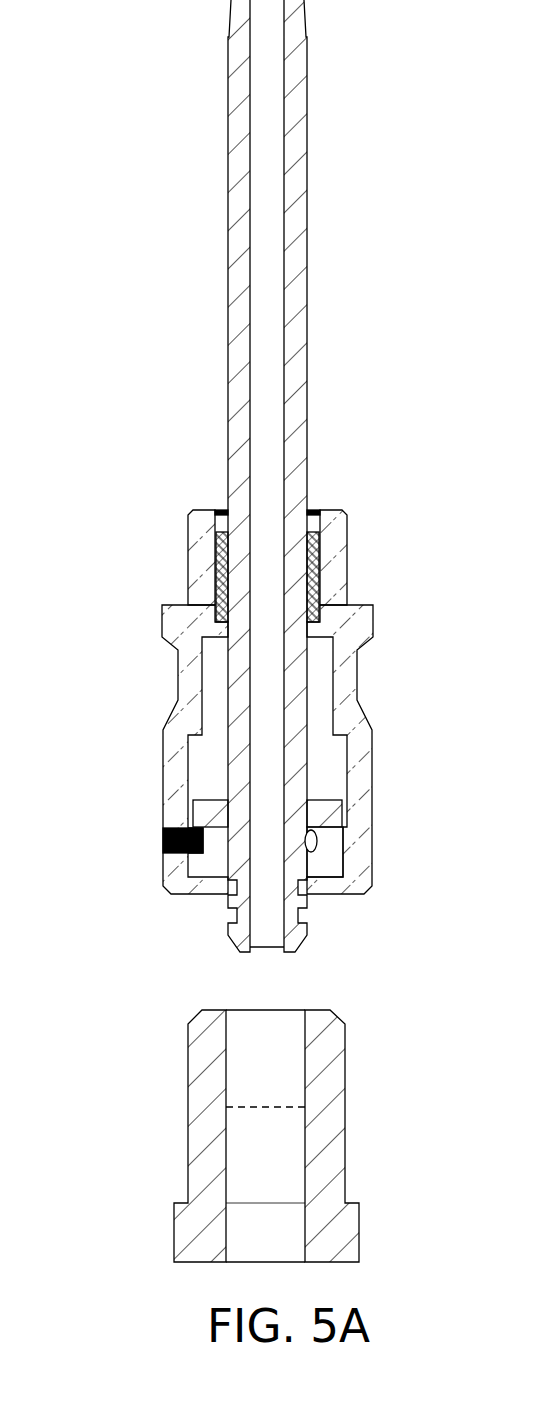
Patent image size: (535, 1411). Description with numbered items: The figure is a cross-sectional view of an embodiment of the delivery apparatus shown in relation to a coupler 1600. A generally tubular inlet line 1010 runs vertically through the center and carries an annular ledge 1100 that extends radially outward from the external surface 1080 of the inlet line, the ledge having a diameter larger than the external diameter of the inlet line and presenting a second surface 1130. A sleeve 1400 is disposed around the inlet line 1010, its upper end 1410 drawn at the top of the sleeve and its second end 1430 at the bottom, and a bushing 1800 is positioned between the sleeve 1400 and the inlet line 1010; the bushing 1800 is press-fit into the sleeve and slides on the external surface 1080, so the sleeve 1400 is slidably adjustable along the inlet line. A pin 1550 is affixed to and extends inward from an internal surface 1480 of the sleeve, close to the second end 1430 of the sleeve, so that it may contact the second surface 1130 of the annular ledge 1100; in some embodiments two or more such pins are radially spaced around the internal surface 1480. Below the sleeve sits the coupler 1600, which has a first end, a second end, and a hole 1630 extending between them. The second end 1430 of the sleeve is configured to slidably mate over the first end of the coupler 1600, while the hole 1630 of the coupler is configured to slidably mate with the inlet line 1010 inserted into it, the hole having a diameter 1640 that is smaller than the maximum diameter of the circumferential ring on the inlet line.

The inlet line 1010 is at (320, 476).
The external surface of the inlet line 1080 is at (310, 257).
The sleeve 1400 is at (265, 738).
The connector cap portion 1410 is at (176, 523).
The second end of the sleeve 1430 is at (178, 907).
The bushing 1800 is at (318, 590).
The annular ledge 1100 is at (344, 812).
The second surface of the annular ledge 1130 is at (334, 833).
The internal surface of the sleeve 1480 is at (333, 864).
The pin 1550 is at (148, 847).
The coupler 1600 is at (195, 1114).
The hole of the coupler 1630 is at (250, 1025).
The diameter of the hole of the coupler 1640 is at (285, 1109).